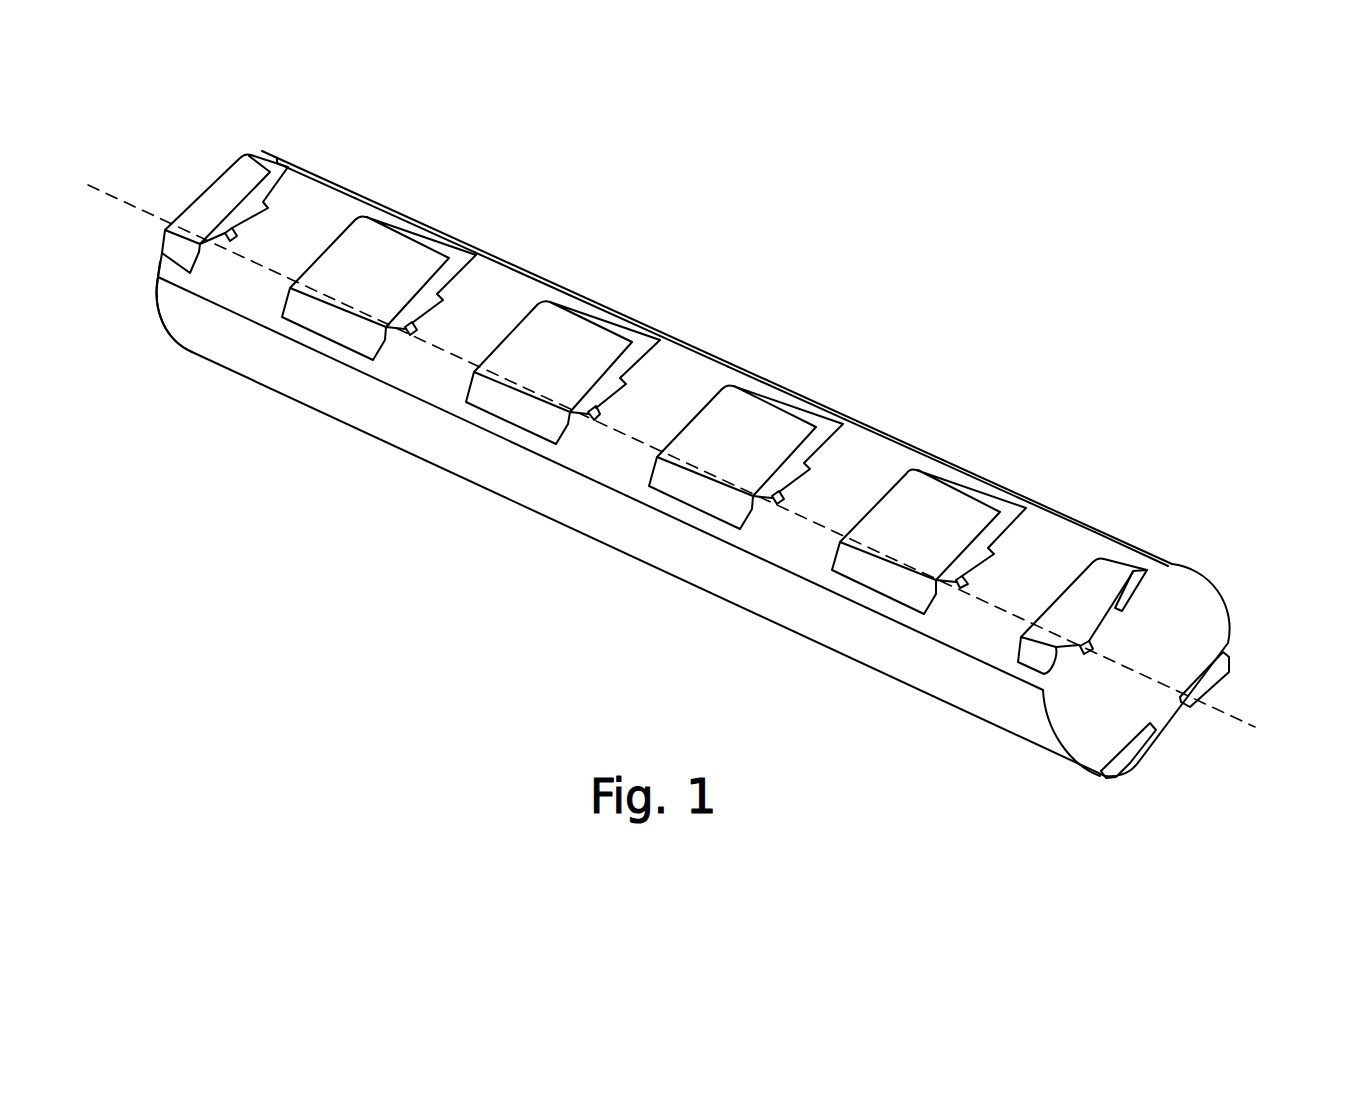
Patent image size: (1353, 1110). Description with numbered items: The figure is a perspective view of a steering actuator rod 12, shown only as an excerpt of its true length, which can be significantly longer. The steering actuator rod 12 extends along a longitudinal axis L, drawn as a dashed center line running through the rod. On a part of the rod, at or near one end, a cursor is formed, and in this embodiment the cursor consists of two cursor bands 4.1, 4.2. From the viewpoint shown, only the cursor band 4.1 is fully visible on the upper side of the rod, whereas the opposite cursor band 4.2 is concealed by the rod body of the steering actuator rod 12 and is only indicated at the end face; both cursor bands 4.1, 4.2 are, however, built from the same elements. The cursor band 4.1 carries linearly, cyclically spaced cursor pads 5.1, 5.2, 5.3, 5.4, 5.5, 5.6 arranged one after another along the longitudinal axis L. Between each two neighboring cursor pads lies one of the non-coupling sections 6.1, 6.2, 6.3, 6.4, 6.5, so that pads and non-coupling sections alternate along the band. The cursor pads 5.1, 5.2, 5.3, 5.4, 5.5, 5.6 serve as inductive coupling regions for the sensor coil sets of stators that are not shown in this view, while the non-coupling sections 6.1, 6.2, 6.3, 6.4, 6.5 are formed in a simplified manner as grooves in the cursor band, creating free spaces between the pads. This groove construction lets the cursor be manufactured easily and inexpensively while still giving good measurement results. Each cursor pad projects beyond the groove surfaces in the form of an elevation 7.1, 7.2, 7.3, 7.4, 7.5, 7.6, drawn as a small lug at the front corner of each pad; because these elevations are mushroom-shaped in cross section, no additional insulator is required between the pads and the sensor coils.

The steering actuator rod 12 is at (1193, 598).
The longitudinal axis L is at (686, 464).
The cursor band 4.1 is at (192, 198).
The cursor band 4.2 is at (1170, 745).
The cursor pad 5.1 is at (240, 178).
The cursor pad 5.2 is at (405, 262).
The cursor pad 5.3 is at (563, 358).
The cursor pad 5.4 is at (753, 423).
The cursor pad 5.5 is at (945, 500).
The cursor pad 5.6 is at (1113, 565).
The non-coupling section 6.1 is at (297, 227).
The non-coupling section 6.2 is at (492, 308).
The non-coupling section 6.3 is at (680, 388).
The non-coupling section 6.4 is at (860, 460).
The non-coupling section 6.5 is at (1045, 545).
The elevation 7.1 is at (230, 242).
The elevation 7.2 is at (410, 336).
The elevation 7.3 is at (594, 420).
The elevation 7.4 is at (777, 505).
The elevation 7.5 is at (960, 590).
The elevation 7.6 is at (1088, 654).